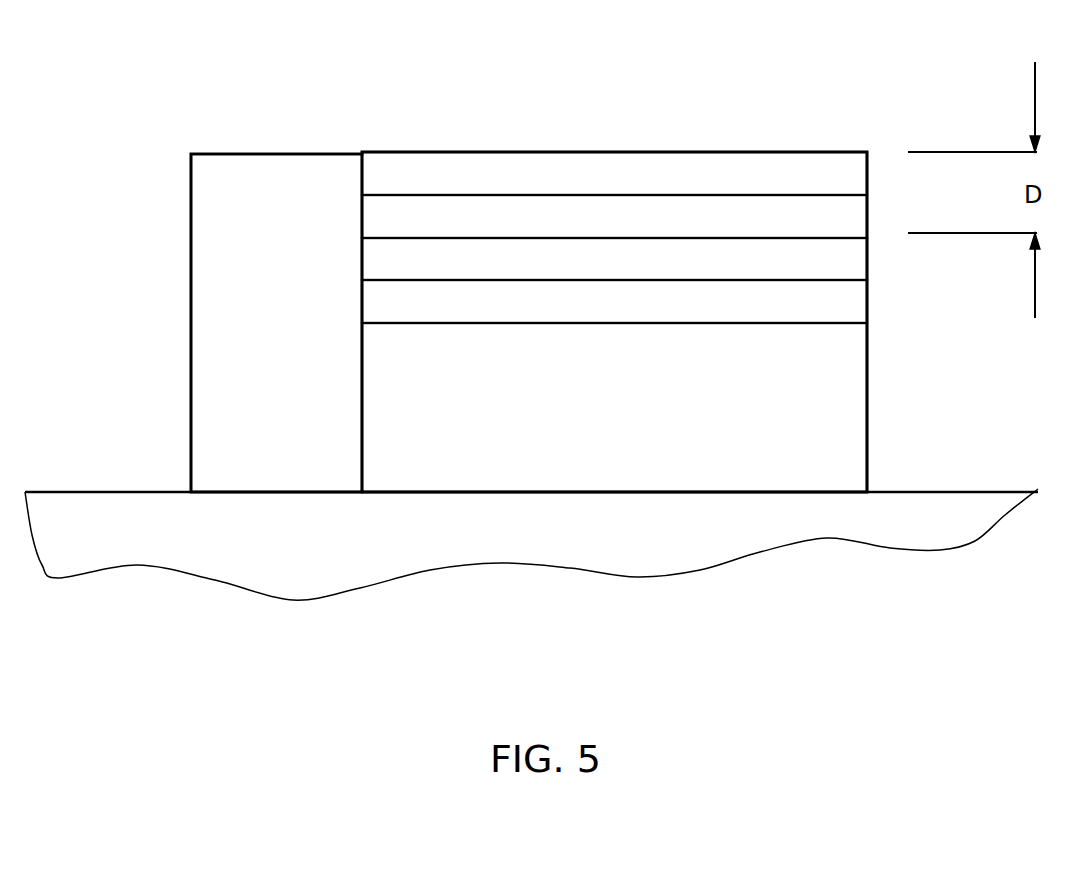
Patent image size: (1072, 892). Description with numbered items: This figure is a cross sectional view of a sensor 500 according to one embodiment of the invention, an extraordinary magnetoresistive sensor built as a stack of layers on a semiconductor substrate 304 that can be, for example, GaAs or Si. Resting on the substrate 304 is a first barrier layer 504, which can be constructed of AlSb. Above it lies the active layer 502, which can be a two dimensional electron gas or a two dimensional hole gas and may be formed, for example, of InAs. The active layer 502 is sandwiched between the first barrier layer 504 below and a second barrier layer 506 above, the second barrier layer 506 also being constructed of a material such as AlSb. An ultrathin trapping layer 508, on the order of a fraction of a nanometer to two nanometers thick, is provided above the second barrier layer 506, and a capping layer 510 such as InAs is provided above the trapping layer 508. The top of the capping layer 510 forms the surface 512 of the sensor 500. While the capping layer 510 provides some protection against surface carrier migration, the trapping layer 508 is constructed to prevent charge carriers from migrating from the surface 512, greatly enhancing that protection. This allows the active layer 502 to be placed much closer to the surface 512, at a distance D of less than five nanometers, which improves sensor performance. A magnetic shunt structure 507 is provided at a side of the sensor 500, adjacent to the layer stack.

The sensor 500 is at (375, 142).
The surface 512 is at (580, 151).
The capping layer 510 is at (696, 175).
The trapping layer 508 is at (696, 216).
The second barrier layer 506 is at (696, 258).
The active layer 502 is at (698, 300).
The first barrier layer 504 is at (698, 404).
The magnetic shunt structure 507 is at (296, 368).
The semiconductor substrate 304 is at (633, 524).